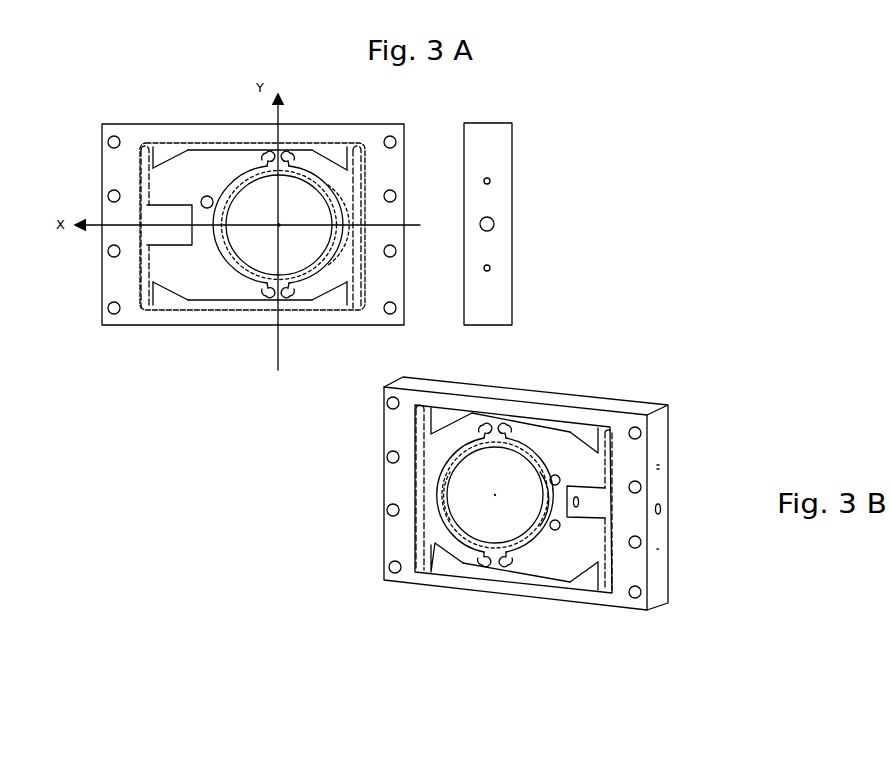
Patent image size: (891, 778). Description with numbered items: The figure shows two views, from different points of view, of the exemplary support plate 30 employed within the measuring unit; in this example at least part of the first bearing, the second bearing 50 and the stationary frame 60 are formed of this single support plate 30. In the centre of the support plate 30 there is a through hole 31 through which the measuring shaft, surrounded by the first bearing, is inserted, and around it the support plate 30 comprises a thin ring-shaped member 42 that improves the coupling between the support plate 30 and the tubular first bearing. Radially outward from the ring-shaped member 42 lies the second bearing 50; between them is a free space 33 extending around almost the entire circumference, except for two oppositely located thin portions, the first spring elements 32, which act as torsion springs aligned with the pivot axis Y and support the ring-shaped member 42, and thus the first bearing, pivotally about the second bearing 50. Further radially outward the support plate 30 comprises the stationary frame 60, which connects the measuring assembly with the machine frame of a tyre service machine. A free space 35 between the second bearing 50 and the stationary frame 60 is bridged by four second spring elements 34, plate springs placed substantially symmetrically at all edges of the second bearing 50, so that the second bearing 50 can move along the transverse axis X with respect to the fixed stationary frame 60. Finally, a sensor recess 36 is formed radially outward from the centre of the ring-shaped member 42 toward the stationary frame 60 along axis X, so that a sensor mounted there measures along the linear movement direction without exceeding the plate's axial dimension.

In FIG. 3A, the support plate 30 is at (585, 226).
In FIG. 3B, the support plate 30 is at (296, 530).
In FIG. 3A, the through hole 31 is at (263, 236).
In FIG. 3B, the through hole 31 is at (510, 506).
In FIG. 3A, the first spring elements 32 is at (290, 160).
In FIG. 3B, the first spring elements 32 is at (500, 438).
In FIG. 3A, the free space 33 is at (252, 163).
In FIG. 3B, the free space 33 is at (450, 452).
In FIG. 3A, the second spring elements 34 is at (148, 140).
In FIG. 3B, the second spring elements 34 is at (440, 418).
In FIG. 3A, the free space 35 is at (217, 142).
In FIG. 3B, the free space 35 is at (585, 430).
In FIG. 3A, the sensor recess 36 is at (170, 234).
In FIG. 3B, the sensor recess 36 is at (593, 503).
In FIG. 3A, the ring-shaped member 42 is at (336, 240).
In FIG. 3B, the ring-shaped member 42 is at (453, 528).
In FIG. 3A, the second bearing 50 is at (190, 160).
In FIG. 3B, the second bearing 50 is at (455, 512).
In FIG. 3A, the stationary frame 60 is at (120, 130).
In FIG. 3B, the stationary frame 60 is at (393, 482).